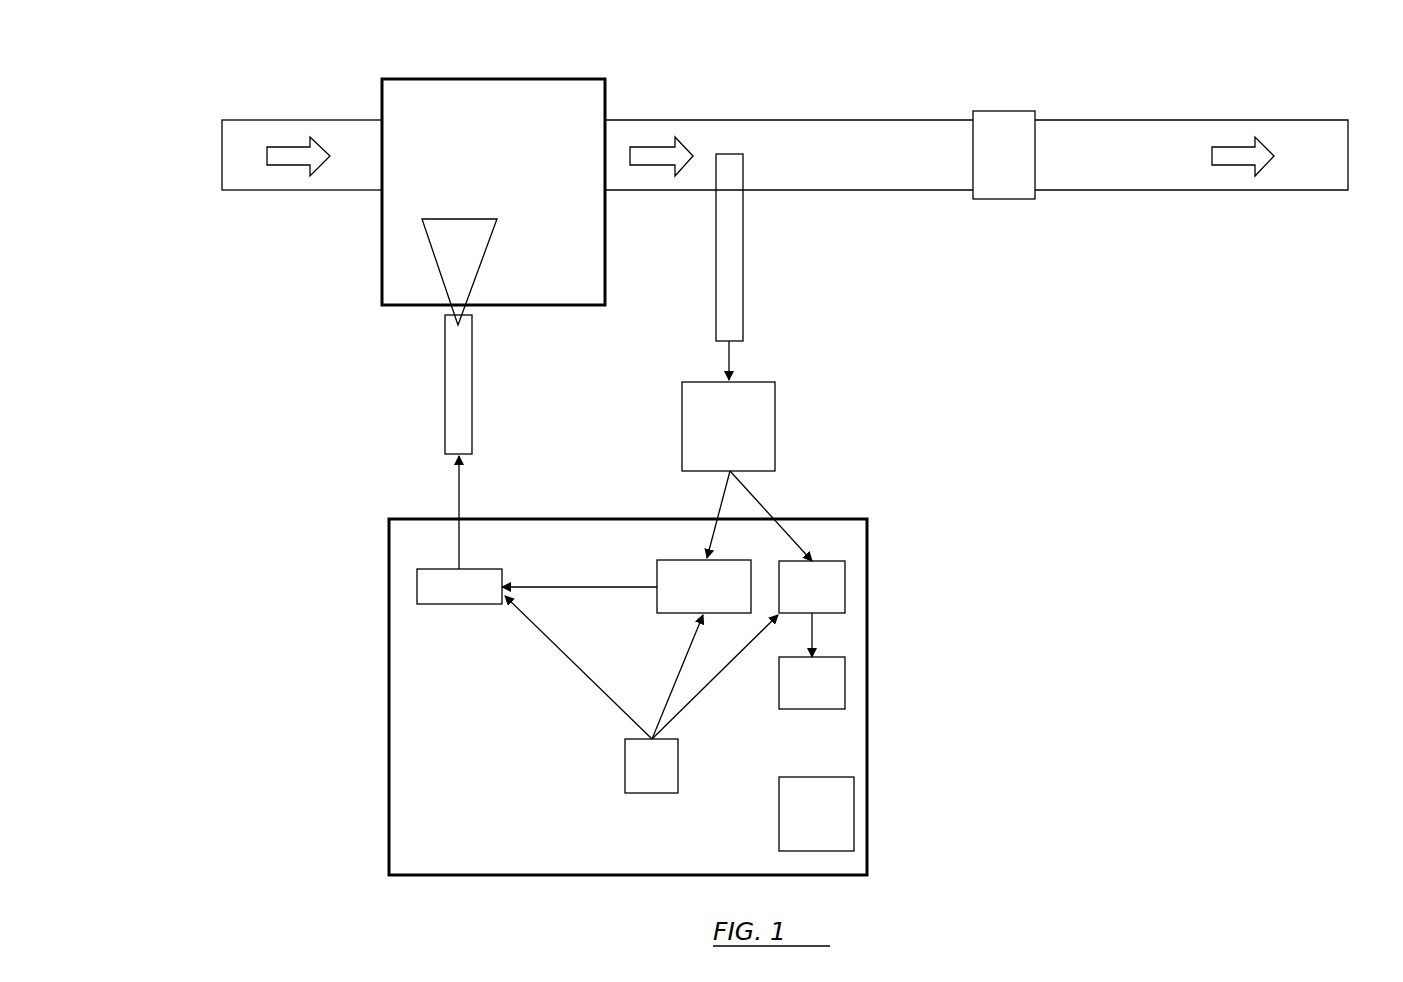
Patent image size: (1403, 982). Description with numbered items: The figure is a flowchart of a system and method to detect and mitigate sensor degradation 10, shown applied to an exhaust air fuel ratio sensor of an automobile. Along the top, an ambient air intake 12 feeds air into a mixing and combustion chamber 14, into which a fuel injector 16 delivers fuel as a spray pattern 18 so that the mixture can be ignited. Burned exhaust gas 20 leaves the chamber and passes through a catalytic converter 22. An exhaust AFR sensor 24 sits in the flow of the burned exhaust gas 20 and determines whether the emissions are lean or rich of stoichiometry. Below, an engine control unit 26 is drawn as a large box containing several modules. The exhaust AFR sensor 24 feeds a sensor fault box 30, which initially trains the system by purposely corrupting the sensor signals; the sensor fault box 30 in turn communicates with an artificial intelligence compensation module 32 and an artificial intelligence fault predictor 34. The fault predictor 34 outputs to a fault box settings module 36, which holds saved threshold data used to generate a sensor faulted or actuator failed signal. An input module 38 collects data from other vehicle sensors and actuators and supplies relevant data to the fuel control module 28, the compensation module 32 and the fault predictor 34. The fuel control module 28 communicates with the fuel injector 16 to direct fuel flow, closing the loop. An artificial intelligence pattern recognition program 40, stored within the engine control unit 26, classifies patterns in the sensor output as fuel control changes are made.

The system and method to detect and mitigate sensor degradation 10 is at (1186, 80).
The ambient air intake 12 is at (246, 130).
The mixing and combustion chamber 14 is at (494, 101).
The fuel injector 16 is at (453, 403).
The spray pattern 18 is at (463, 270).
The burned exhaust gas 20 is at (846, 132).
The catalytic converter 22 is at (1005, 133).
The exhaust AFR sensor 24 is at (735, 251).
The engine control unit (ECU) 26 is at (835, 518).
The fuel control module 28 is at (433, 590).
The sensor fault box 30 is at (778, 423).
The artificial intelligence compensation module 32 is at (678, 570).
The artificial intelligence fault predictor 34 is at (836, 583).
The fault box settings module 36 is at (836, 685).
The input module 38 is at (637, 793).
The artificial intelligence pattern recognition program 40 is at (836, 806).